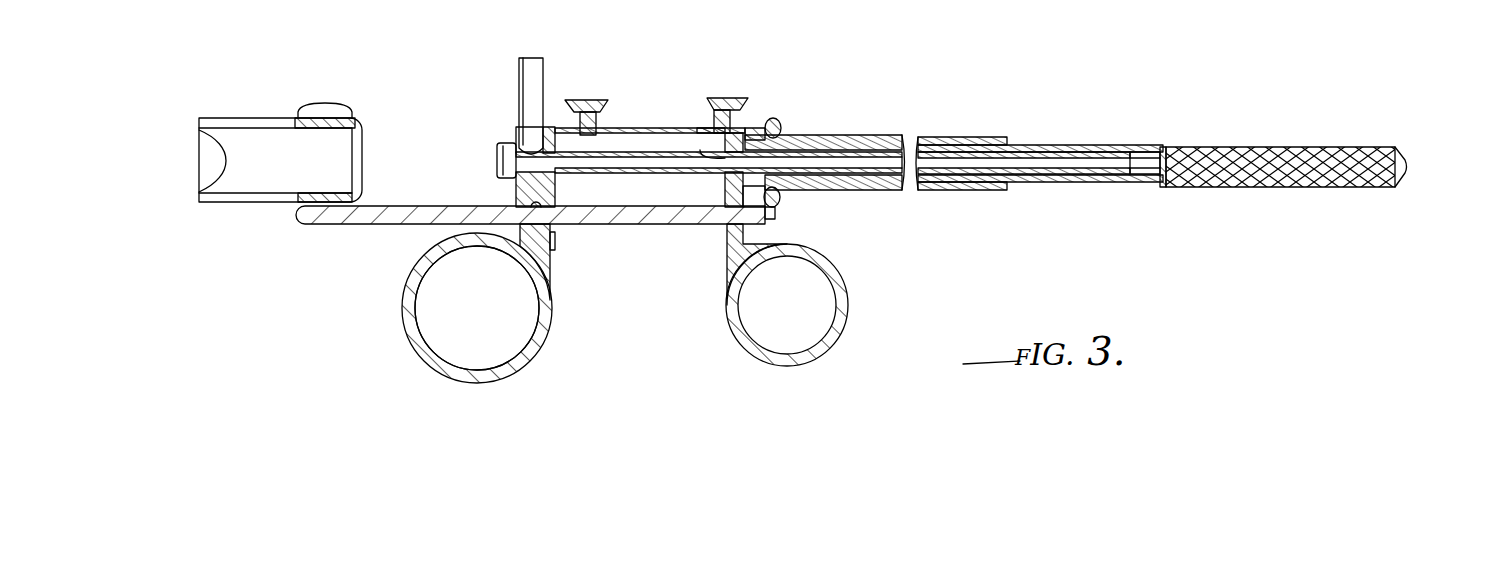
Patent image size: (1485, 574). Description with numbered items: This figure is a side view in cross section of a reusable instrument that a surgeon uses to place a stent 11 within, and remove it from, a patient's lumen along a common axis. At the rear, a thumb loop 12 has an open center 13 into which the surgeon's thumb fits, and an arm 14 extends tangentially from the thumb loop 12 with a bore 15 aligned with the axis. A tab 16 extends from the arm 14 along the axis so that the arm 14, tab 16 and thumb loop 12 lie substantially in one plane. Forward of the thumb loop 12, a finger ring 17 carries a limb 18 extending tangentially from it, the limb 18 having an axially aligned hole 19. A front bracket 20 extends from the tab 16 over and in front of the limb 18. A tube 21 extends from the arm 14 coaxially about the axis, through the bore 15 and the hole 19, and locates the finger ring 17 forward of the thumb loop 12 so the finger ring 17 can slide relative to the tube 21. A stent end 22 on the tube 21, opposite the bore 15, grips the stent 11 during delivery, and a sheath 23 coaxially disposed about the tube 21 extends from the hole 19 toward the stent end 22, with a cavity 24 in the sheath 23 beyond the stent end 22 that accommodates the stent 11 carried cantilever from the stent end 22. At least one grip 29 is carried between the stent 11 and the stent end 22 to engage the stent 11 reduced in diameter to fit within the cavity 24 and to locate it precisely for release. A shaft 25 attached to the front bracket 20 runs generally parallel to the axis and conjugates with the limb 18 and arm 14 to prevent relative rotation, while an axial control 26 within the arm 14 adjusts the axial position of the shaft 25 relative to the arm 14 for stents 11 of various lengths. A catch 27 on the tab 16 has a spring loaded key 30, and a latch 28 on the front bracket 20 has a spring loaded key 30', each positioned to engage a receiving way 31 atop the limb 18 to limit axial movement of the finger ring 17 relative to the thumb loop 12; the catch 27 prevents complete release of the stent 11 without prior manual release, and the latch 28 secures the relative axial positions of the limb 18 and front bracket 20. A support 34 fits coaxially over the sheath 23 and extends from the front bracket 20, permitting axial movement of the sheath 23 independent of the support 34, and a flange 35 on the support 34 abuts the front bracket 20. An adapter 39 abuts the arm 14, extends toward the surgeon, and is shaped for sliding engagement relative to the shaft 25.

The stent 11 is at (1215, 158).
The thumb loop 12 is at (448, 378).
The open center 13 is at (425, 335).
The arm 14 is at (516, 190).
The bore 15 is at (497, 152).
The tab 16 is at (552, 128).
The finger ring 17 is at (832, 350).
The limb 18 is at (725, 190).
The hole 19 is at (723, 150).
The front bracket 20 is at (770, 218).
The tube 21 is at (643, 150).
The stent end 22 is at (1090, 175).
The sheath 23 is at (1290, 147).
The cavity 24 is at (1405, 168).
The shaft 25 is at (668, 226).
The axial control 26 is at (552, 258).
The catch 27 is at (590, 100).
The latch 28 is at (735, 100).
The grip 29 is at (1165, 168).
The spring loaded key 30 is at (650, 116).
The spring loaded key 30' is at (694, 96).
The receiving way 31 is at (755, 128).
The support 34 is at (966, 137).
The flange 35 is at (780, 123).
The adapter 39 is at (250, 118).